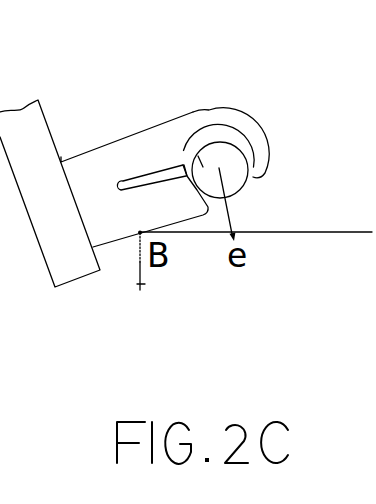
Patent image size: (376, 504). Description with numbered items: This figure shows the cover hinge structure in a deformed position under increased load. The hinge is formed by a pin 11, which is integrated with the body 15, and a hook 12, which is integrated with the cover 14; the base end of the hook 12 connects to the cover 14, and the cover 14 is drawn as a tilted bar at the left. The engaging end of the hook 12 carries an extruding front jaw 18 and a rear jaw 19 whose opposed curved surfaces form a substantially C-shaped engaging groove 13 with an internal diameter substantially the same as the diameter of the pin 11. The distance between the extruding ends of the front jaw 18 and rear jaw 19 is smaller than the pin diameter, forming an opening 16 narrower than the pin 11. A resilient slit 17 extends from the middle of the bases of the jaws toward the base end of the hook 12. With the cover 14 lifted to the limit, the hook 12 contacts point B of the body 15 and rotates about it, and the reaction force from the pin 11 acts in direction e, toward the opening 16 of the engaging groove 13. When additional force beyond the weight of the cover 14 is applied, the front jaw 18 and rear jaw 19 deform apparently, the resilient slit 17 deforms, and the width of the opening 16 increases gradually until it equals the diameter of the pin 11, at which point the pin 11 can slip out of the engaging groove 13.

The pin 11 is at (202, 165).
The hook 12 is at (78, 163).
The engaging groove 13 is at (210, 135).
The cover 14 is at (23, 115).
The body 15 is at (142, 284).
The opening 16 is at (253, 185).
The resilient slit 17 is at (135, 182).
The front jaw 18 is at (253, 135).
The rear jaw 19 is at (182, 164).